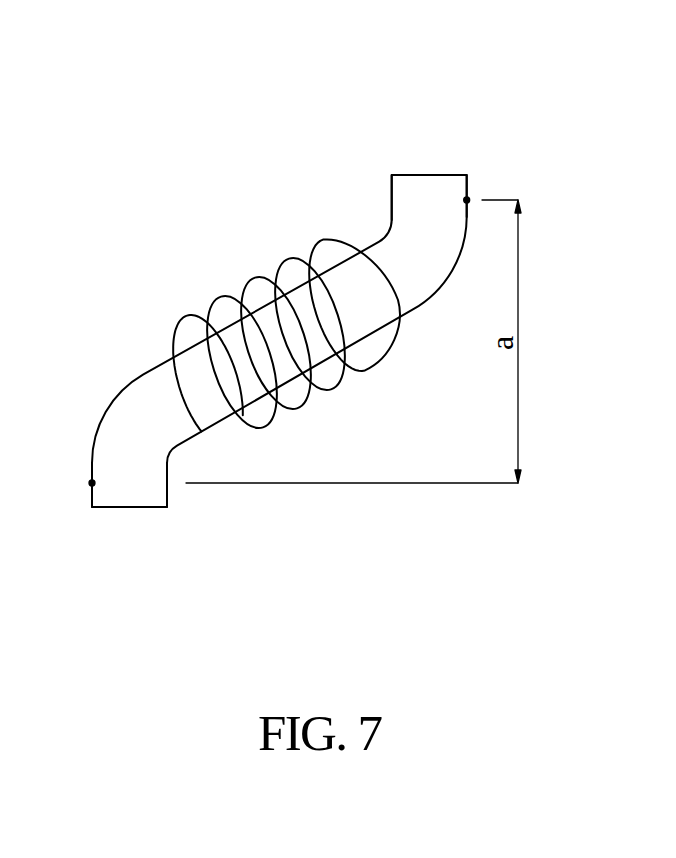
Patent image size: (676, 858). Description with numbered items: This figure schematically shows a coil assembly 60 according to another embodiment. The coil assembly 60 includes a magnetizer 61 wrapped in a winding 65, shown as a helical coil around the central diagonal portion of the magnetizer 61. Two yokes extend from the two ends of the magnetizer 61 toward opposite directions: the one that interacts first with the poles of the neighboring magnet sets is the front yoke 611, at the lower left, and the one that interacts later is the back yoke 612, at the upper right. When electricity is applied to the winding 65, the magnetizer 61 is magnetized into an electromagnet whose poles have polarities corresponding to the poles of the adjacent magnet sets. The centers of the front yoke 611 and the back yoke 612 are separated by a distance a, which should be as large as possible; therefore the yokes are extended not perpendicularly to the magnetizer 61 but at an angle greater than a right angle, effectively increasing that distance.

The coil assembly 60 is at (236, 219).
The magnetizer 61 is at (377, 257).
The front yoke 611 is at (133, 493).
The back yoke 612 is at (422, 187).
The winding 65 is at (221, 297).